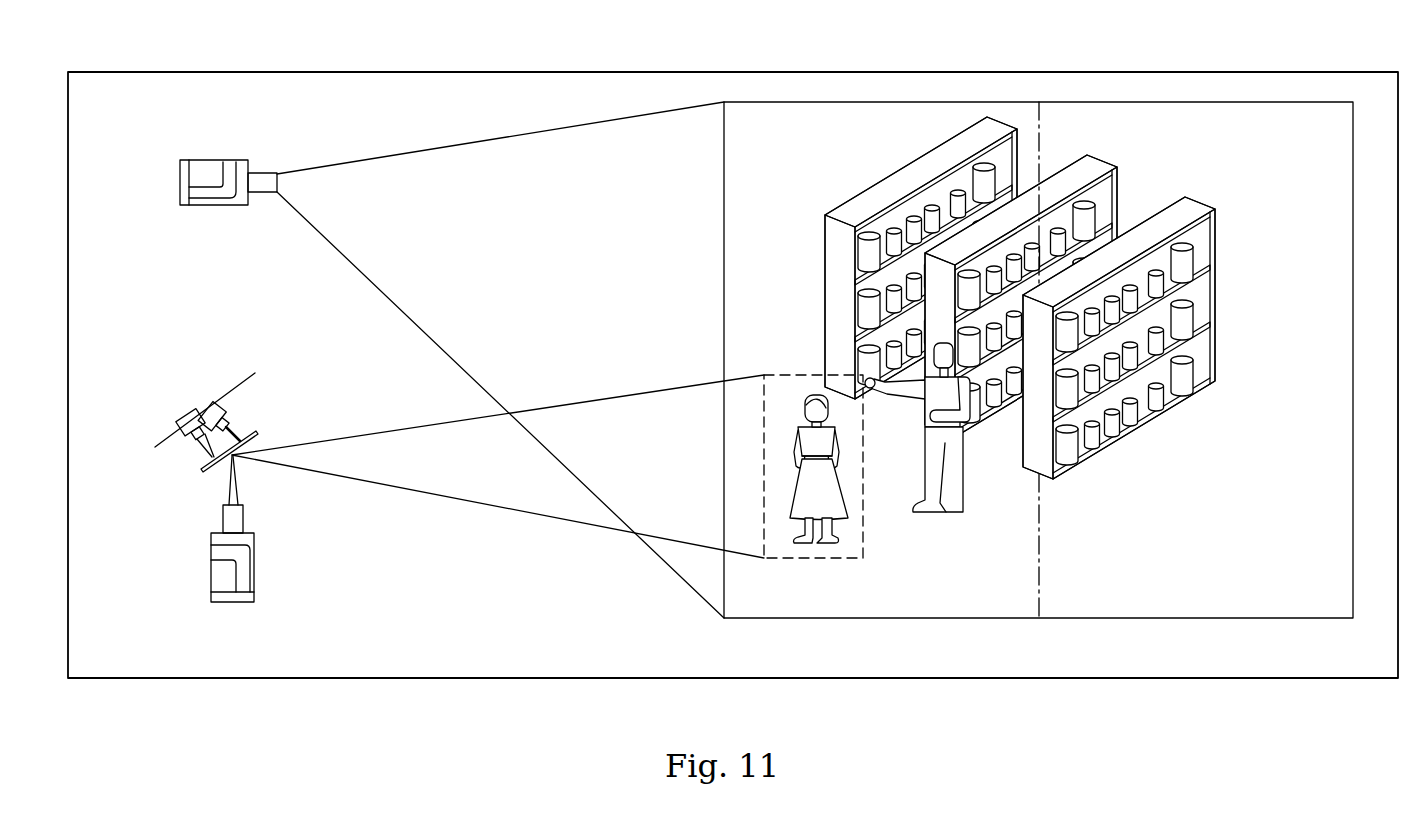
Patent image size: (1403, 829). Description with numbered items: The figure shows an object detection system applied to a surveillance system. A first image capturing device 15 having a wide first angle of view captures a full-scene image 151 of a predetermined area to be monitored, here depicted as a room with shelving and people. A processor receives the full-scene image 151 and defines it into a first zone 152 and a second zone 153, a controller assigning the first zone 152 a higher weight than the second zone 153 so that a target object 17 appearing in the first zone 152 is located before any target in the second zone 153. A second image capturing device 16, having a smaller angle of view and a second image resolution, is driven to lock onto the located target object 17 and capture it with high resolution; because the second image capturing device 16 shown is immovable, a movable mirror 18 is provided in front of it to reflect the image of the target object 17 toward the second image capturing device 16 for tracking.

The first image capturing device 15 is at (217, 160).
The second image capturing device 16 is at (212, 566).
The target object 17 is at (778, 560).
The mirror 18 is at (257, 437).
The full-scene image 151 is at (795, 100).
The first zone 152 is at (876, 600).
The second zone 153 is at (1245, 605).